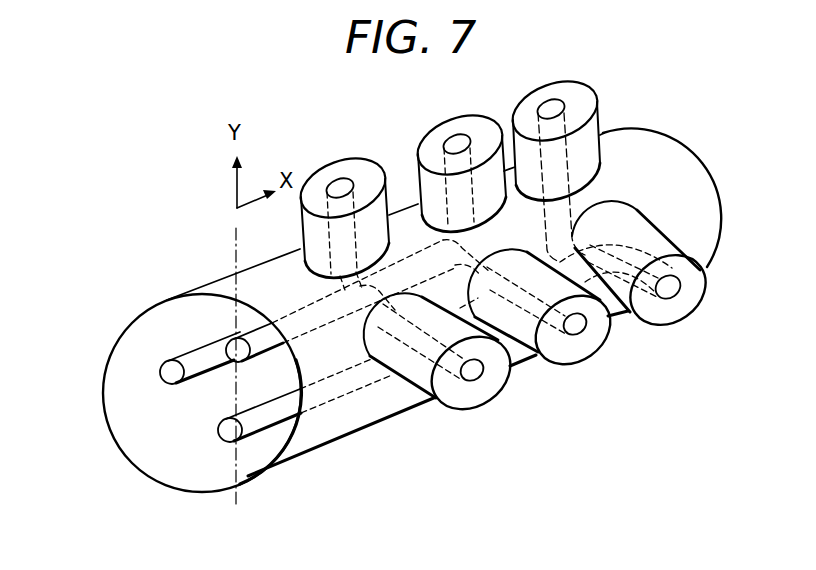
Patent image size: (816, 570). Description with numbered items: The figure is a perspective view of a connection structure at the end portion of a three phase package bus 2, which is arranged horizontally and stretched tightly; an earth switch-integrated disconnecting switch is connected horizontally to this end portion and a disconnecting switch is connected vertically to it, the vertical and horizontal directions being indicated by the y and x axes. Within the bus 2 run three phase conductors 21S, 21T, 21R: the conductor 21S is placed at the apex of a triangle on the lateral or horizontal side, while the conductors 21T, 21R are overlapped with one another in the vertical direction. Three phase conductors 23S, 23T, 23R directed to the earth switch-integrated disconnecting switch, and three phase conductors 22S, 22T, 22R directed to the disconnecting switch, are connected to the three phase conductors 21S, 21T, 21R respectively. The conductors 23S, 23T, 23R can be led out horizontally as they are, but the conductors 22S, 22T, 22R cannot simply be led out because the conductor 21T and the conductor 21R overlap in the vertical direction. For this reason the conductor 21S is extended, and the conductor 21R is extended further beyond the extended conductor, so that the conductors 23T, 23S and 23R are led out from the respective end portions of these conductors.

The bus 2 is at (650, 140).
The conductor 21S is at (165, 371).
The conductor 21T is at (238, 353).
The conductor 21R is at (230, 434).
The conductor 22T is at (341, 185).
The conductor 22S is at (456, 140).
The conductor 22R is at (551, 104).
The conductor 23T is at (472, 383).
The conductor 23S is at (576, 336).
The conductor 23R is at (670, 298).